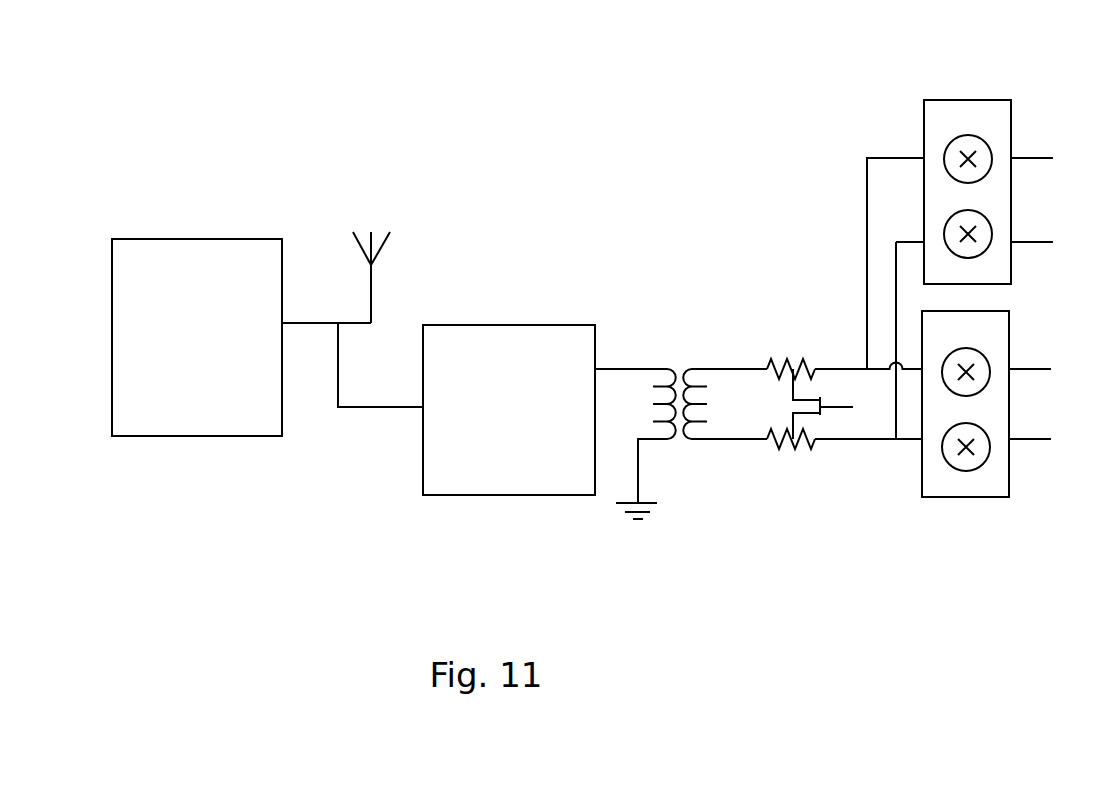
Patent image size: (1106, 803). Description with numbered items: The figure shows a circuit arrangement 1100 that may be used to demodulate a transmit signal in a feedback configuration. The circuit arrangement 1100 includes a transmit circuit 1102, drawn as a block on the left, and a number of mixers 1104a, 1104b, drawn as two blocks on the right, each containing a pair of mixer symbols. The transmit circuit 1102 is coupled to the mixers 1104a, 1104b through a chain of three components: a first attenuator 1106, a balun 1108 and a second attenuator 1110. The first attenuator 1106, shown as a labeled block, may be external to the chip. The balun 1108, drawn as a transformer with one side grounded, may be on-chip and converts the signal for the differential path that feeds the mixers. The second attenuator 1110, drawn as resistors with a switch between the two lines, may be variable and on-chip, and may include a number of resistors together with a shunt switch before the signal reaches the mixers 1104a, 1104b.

The circuit arrangement 1100 is at (676, 88).
The transmit circuit 1102 is at (233, 202).
The mixer 1104a is at (1036, 92).
The mixer 1104b is at (1033, 333).
The first attenuator 1106 is at (550, 301).
The balun 1108 is at (703, 327).
The second attenuator 1110 is at (794, 340).